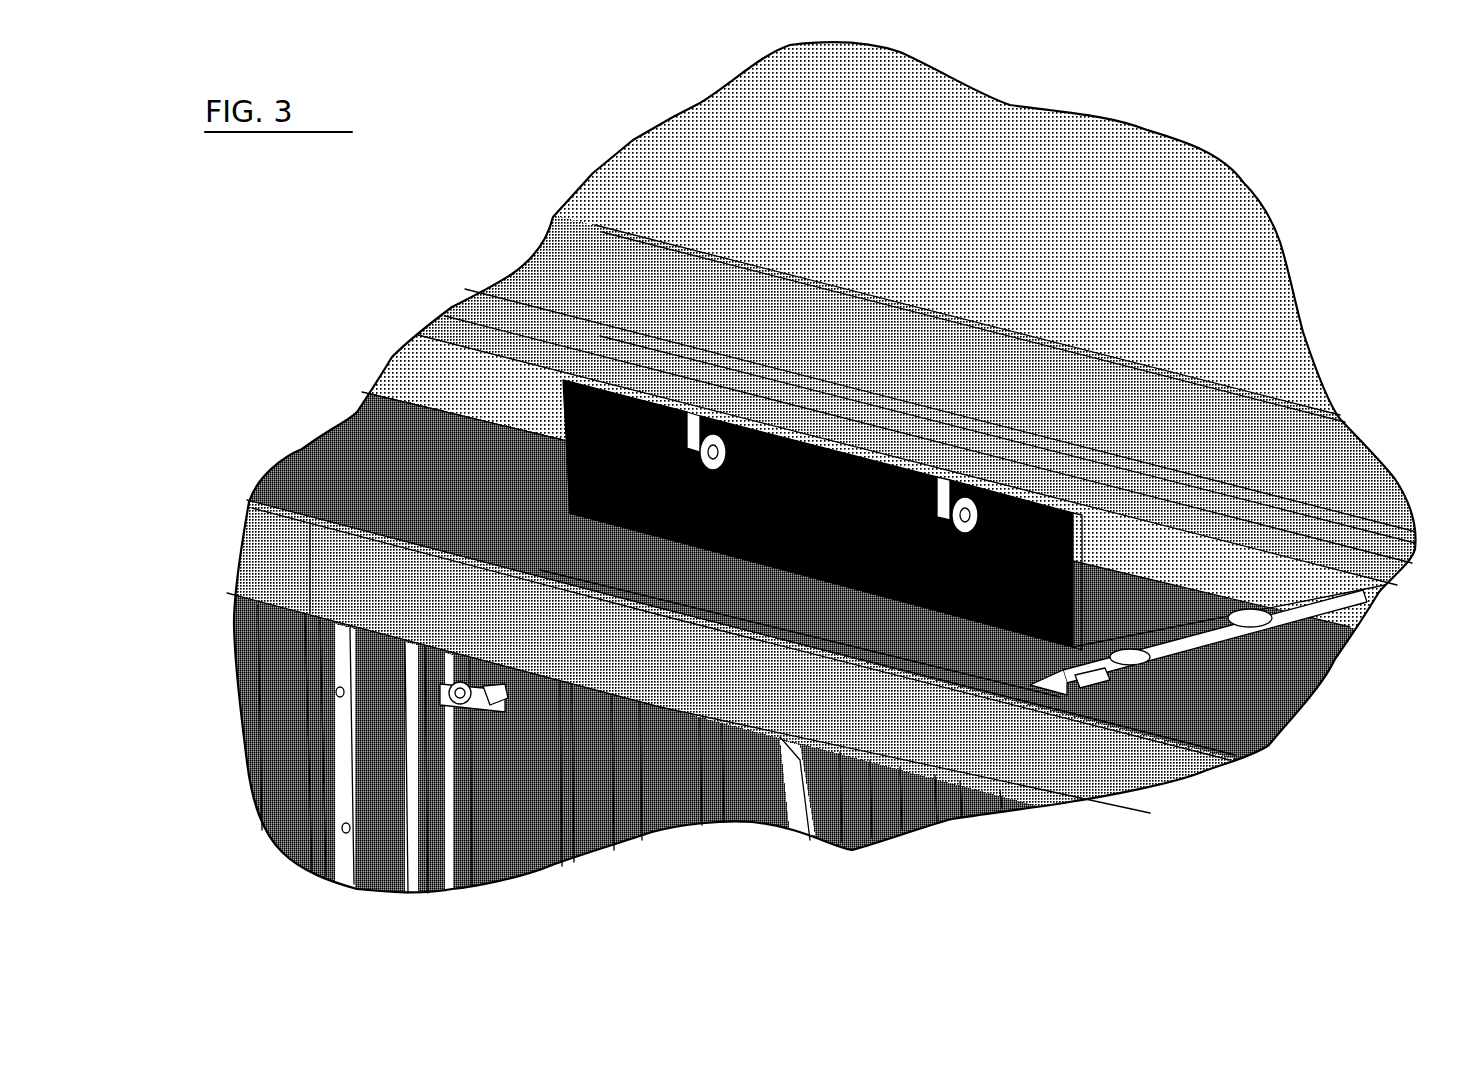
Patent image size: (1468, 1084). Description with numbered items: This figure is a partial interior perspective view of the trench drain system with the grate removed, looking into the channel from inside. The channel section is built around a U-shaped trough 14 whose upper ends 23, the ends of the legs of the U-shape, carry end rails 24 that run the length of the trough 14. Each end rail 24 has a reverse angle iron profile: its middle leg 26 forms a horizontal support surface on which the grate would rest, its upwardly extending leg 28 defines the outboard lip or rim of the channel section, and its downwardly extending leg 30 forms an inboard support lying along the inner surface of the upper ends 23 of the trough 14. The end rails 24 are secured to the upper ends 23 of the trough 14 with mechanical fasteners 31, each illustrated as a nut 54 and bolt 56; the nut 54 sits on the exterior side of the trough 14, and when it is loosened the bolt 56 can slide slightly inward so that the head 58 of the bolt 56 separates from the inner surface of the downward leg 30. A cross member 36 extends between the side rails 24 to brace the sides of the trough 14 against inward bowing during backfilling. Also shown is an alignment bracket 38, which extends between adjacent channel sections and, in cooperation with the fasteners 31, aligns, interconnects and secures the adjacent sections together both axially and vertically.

The trough 14 is at (655, 198).
The upper ends 23 is at (450, 432).
The end rails 24 is at (588, 278).
The middle leg 26 is at (540, 325).
The upwardly extending leg 28 is at (690, 297).
The downwardly extending leg 30 is at (455, 388).
The mechanical fasteners 31 is at (713, 450).
The cross members 36 is at (1272, 745).
The alignment brackets 38 is at (850, 442).
The nut 54 is at (505, 700).
The bolt 56 is at (465, 715).
The head 58 is at (792, 428).